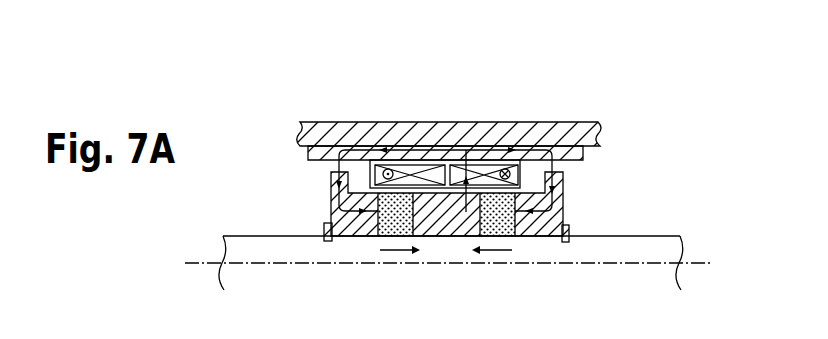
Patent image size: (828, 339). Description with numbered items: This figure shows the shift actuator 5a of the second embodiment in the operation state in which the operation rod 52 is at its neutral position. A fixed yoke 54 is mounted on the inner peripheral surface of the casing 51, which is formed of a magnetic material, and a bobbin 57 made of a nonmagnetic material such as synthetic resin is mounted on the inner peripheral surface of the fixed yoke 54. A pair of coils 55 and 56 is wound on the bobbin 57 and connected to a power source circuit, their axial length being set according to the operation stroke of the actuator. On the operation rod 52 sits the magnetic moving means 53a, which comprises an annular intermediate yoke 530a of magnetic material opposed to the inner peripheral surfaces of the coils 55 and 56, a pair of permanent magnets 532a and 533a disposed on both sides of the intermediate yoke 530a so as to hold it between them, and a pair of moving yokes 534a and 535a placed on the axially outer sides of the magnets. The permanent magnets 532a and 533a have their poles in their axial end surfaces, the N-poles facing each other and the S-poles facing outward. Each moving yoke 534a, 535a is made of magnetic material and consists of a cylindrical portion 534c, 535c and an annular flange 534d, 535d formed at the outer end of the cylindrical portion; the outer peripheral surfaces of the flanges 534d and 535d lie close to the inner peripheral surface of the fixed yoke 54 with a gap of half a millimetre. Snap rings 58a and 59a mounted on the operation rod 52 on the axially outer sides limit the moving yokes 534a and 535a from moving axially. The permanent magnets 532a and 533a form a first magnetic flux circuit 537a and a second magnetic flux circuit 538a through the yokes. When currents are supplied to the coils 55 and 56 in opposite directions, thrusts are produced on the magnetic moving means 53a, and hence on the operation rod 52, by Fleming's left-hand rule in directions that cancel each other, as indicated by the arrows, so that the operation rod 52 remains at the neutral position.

The shift actuator 5a is at (465, 110).
The casing 51 is at (557, 125).
The operation rod 52 is at (664, 236).
The magnetic moving means 53a is at (326, 194).
The fixed yoke 54 is at (301, 147).
The coil 55 is at (504, 165).
The coil 56 is at (413, 165).
The bobbin 57 is at (466, 150).
The snap ring 58a is at (569, 232).
The snap ring 59a is at (323, 230).
The intermediate yoke 530a is at (448, 237).
The permanent magnet 532a is at (500, 237).
The permanent magnet 533a is at (403, 237).
The moving yoke 534a is at (553, 246).
The cylindrical portion 534c is at (527, 237).
The annular flange 534d is at (588, 124).
The moving yoke 535a is at (347, 246).
The cylindrical portion 535c is at (371, 237).
The annular flange 535d is at (311, 124).
The first magnetic flux circuit 537a is at (527, 149).
The second magnetic flux circuit 538a is at (362, 149).